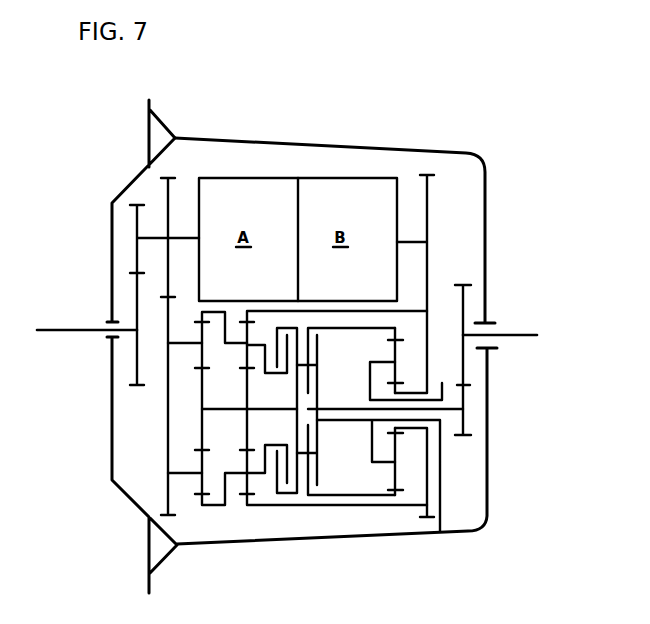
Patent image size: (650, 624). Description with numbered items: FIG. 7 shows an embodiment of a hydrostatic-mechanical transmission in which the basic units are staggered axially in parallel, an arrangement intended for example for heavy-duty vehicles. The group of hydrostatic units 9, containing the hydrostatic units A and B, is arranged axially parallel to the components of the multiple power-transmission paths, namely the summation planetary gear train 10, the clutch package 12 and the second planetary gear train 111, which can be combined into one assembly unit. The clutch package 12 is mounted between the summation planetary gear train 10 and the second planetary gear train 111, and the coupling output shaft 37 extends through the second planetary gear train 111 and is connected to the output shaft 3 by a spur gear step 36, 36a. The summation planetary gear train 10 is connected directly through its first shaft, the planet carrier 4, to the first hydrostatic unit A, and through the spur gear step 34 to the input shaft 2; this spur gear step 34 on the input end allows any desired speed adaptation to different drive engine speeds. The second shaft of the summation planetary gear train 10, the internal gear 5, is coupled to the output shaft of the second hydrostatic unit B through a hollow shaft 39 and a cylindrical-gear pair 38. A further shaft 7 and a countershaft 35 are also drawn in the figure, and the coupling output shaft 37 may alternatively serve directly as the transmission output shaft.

The group of hydrostatic units 9 is at (303, 138).
The input shaft 2 is at (84, 329).
The output shaft 3 is at (508, 335).
The planet carrier 4 is at (187, 470).
The internal gear 5 is at (248, 505).
The intermediate shaft 7 is at (270, 410).
The summation planetary gear train 10 is at (217, 518).
The clutch package 12 is at (292, 515).
The spur gear step 34 is at (134, 312).
The countershaft 35 is at (167, 287).
The spur gear step 36 is at (466, 403).
The spur gear step 36a is at (466, 382).
The coupling output shaft 37 is at (345, 412).
The cylindrical-gear pair 38 is at (430, 309).
The hollow shaft 39 is at (340, 507).
The second planetary gear train 111 is at (390, 512).